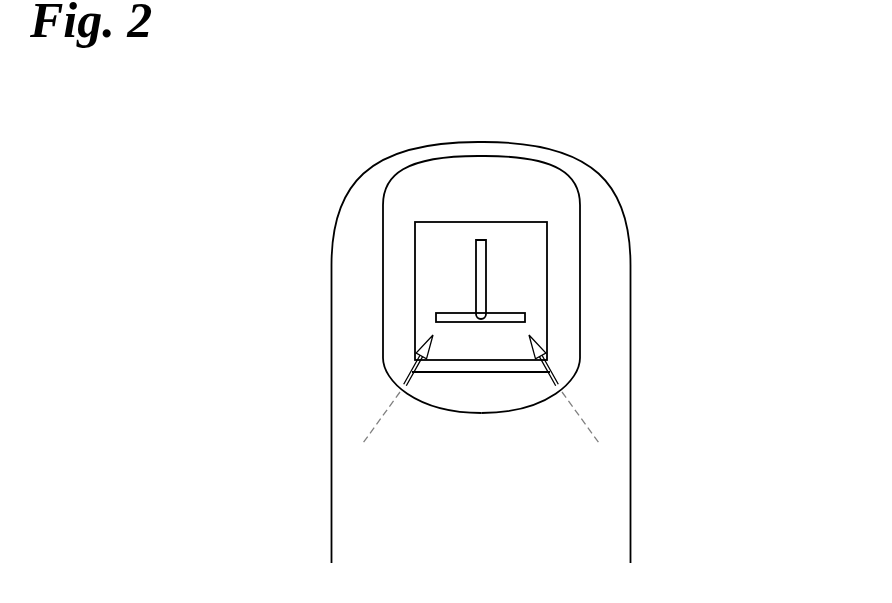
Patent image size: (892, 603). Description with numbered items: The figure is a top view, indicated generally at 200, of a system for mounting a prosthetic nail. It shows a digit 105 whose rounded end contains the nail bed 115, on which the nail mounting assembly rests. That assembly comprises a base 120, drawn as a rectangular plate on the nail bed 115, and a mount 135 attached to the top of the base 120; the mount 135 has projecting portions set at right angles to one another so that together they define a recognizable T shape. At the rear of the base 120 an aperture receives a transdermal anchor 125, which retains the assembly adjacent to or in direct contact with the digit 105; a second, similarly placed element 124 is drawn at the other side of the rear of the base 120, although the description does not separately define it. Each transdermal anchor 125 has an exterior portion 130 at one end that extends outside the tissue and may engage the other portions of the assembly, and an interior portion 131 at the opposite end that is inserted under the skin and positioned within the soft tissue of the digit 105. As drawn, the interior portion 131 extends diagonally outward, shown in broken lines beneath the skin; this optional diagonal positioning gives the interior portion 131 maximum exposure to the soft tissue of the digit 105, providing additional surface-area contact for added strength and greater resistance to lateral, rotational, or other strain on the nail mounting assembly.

The system for mounting a prosthetic nail 200 is at (545, 95).
The digit 105 is at (377, 485).
The nail bed 115 is at (482, 172).
The base 120 is at (428, 233).
The mount 135 is at (478, 285).
The exterior portion 130 is at (402, 378).
The interior portion 131 is at (367, 433).
The first edge 124 is at (556, 398).
The transdermal anchor 125 is at (407, 396).